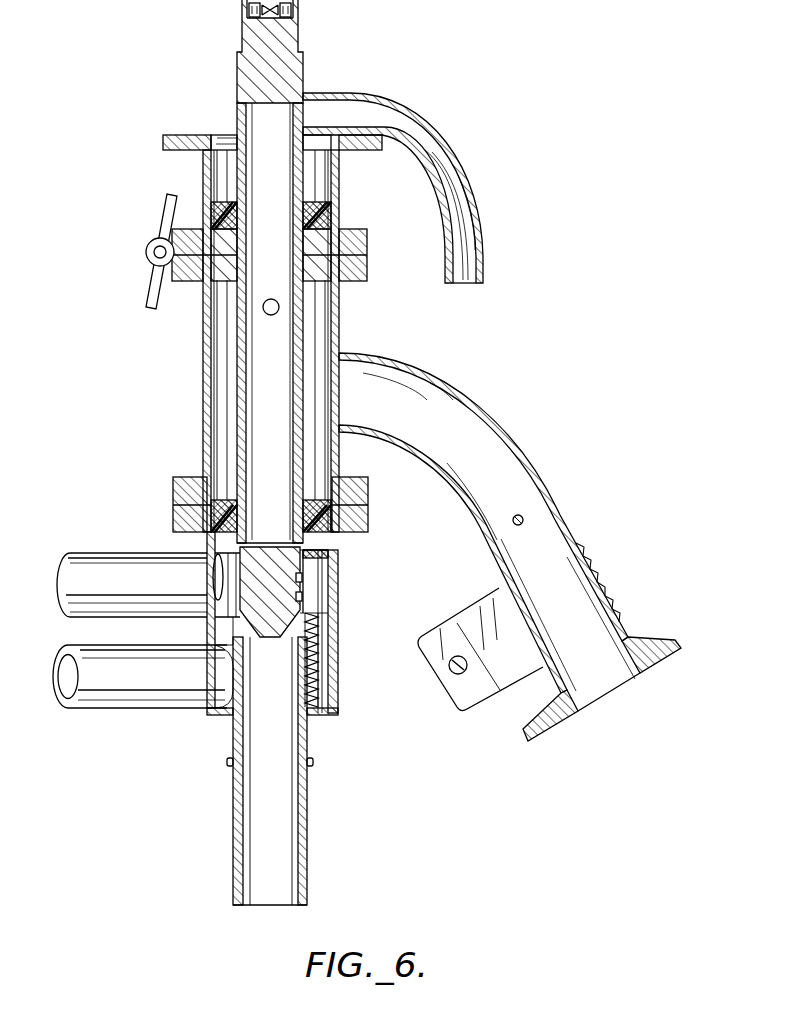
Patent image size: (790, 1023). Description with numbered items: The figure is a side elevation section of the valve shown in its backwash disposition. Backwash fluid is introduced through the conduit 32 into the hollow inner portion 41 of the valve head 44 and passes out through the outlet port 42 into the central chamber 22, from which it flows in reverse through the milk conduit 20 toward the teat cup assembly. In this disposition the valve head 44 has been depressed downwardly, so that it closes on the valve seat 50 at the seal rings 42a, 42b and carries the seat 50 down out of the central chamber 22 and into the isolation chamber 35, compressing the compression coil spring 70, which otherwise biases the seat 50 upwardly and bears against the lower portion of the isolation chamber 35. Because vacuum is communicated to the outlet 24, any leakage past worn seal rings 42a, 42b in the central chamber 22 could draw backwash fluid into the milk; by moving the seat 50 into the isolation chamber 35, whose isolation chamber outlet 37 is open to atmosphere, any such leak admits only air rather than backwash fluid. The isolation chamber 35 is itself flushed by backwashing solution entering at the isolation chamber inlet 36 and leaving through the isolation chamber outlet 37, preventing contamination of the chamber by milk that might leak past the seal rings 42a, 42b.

The milk conduit 20 is at (590, 639).
The central chamber 22 is at (212, 385).
The outlet 24 is at (307, 853).
The conduit 32 is at (484, 252).
The isolation chamber 35 is at (338, 648).
The isolation chamber inlet 36 is at (116, 562).
The isolation chamber outlet 37 is at (108, 660).
The hollow inner portion 41 is at (287, 392).
The outlet port 42 is at (280, 308).
The seal ring 42a is at (298, 579).
The seal ring 42b is at (299, 598).
The valve head 44 is at (290, 618).
The valve seat 50 is at (333, 556).
The compression coil spring 70 is at (318, 683).